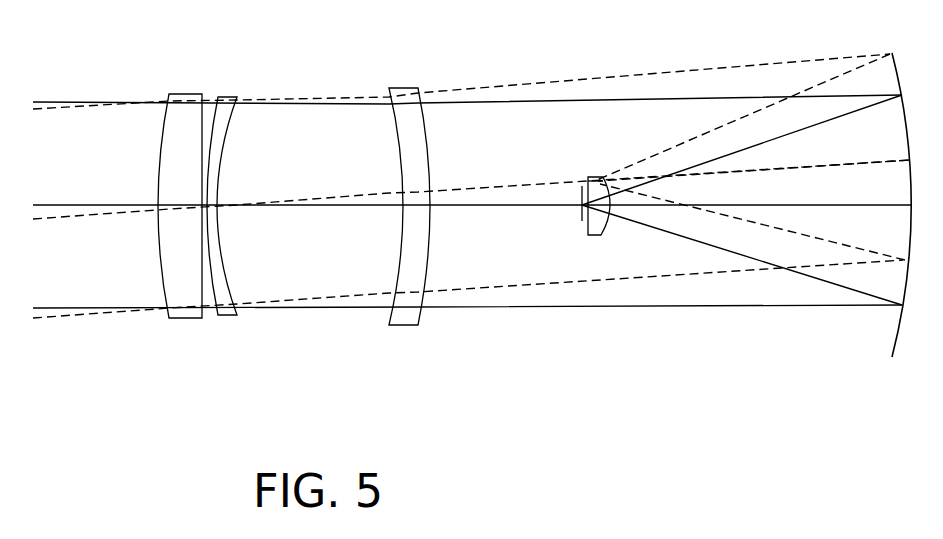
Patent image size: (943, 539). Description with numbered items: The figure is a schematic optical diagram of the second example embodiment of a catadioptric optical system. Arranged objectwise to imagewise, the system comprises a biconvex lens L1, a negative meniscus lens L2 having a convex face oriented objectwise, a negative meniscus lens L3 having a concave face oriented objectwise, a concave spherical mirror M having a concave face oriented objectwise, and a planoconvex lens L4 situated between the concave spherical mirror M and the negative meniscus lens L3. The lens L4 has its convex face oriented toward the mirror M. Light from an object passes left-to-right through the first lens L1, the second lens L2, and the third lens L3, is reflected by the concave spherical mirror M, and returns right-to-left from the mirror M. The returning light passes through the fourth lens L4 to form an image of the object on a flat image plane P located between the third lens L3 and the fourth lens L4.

The biconvex lens L1 is at (186, 93).
The negative meniscus lens L2 is at (230, 96).
The negative meniscus lens L3 is at (407, 87).
The planoconvex lens L4 is at (596, 177).
The flat image plane P is at (581, 220).
The concave spherical mirror M is at (898, 78).